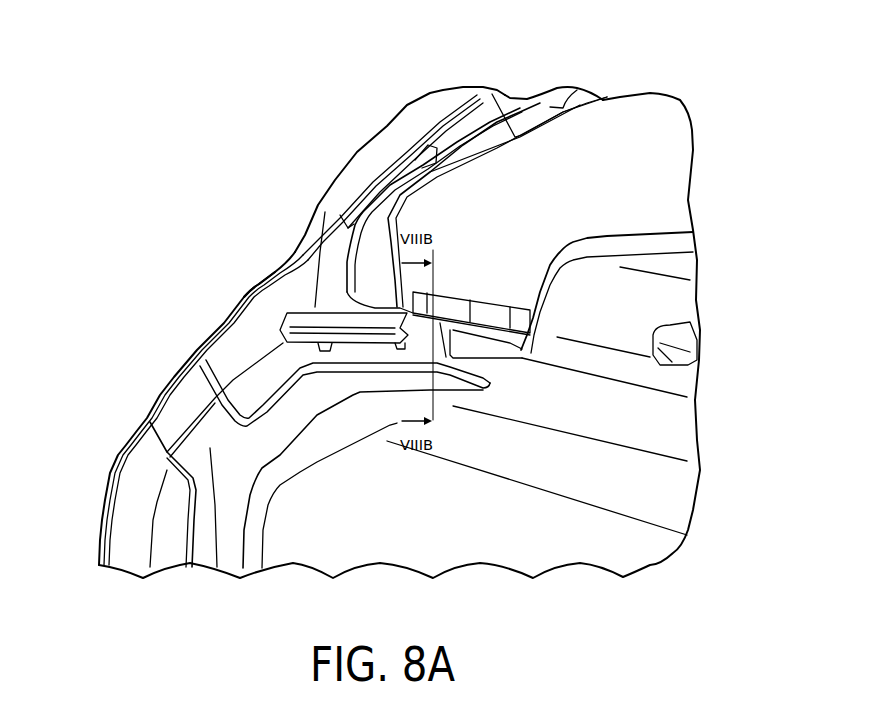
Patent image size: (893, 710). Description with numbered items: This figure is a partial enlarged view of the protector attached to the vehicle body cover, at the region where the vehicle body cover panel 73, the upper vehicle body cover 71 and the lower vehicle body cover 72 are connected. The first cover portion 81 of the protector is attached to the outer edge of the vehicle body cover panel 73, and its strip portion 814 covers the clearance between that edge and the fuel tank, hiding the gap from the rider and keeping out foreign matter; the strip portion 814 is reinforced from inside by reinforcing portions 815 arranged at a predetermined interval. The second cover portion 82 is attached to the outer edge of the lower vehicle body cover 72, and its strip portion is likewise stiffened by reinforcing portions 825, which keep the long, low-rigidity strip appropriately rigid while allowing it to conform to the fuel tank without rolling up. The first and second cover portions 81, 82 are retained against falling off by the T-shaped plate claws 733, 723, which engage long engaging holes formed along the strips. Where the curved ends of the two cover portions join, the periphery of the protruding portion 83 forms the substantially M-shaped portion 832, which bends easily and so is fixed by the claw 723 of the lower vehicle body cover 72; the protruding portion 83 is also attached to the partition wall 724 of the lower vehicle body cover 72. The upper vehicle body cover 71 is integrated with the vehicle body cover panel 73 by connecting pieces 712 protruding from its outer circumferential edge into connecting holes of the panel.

The first cover portion 81 is at (386, 103).
The strip portion 814 is at (445, 100).
The reinforcing portion 815 is at (590, 95).
The vehicle body cover panel 73 is at (678, 162).
The claw 733 is at (367, 180).
The M-shaped portion 832 is at (258, 246).
The second cover portion 82 is at (116, 422).
The reinforcing portion 825 is at (217, 567).
The claw 723 is at (362, 345).
The upper vehicle body cover 71 is at (455, 300).
The protruding portion 83 is at (445, 391).
The partition wall 724 is at (510, 357).
The connecting piece 712 is at (695, 338).
The lower vehicle body cover 72 is at (672, 502).